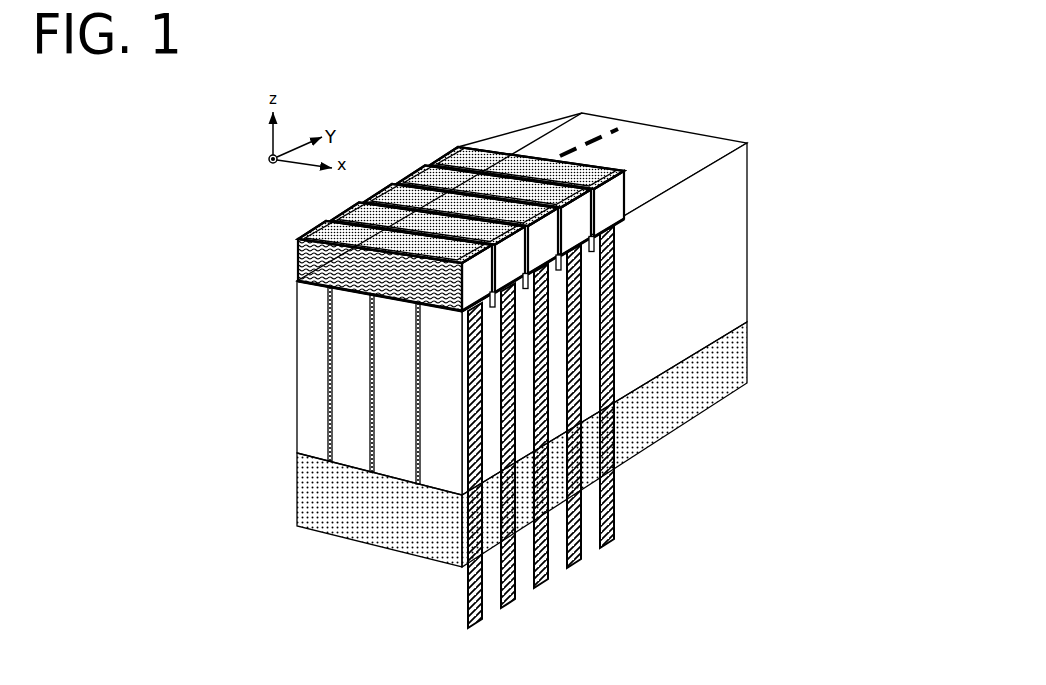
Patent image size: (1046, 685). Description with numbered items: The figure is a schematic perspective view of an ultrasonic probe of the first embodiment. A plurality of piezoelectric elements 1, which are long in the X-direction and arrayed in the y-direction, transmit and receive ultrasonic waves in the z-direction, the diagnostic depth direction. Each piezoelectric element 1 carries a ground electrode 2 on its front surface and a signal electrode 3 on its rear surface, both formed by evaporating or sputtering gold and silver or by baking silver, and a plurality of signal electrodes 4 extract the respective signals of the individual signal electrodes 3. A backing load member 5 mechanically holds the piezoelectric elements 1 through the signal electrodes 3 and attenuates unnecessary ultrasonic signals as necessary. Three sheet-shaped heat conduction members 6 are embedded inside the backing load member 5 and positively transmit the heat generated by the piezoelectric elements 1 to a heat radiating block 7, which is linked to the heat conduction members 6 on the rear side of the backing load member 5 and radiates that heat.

The piezoelectric element 1 is at (297, 261).
The ground electrode 2 is at (297, 236).
The signal electrode 3 is at (300, 285).
The signal electrode 4 is at (585, 548).
The backing load member 5 is at (652, 333).
The heat conduction member 6 is at (366, 428).
The heat radiating block 7 is at (313, 503).